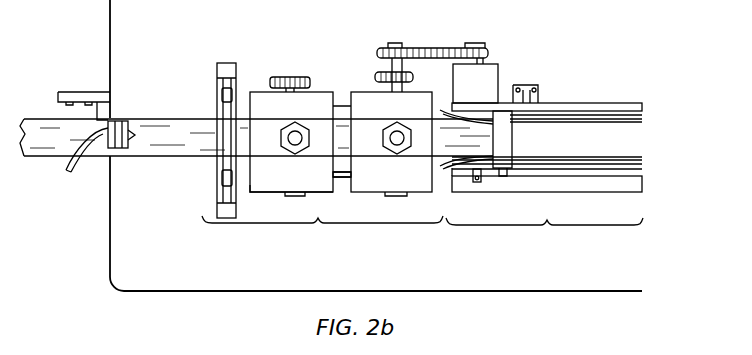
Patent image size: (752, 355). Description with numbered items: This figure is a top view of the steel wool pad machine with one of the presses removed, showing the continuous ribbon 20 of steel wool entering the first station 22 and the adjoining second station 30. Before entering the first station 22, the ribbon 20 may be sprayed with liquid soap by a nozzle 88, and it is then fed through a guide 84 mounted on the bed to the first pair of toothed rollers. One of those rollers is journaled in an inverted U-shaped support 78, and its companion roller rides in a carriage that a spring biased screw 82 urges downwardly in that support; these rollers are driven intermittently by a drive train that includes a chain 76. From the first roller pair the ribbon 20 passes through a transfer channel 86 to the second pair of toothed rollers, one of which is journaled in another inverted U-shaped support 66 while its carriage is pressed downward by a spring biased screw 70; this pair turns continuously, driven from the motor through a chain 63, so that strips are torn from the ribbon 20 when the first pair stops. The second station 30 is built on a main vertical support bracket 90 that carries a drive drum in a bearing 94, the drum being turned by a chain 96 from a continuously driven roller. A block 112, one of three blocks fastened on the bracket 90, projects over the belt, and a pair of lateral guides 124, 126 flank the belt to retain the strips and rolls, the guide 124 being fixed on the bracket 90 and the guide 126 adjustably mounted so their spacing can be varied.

The ribbon 20 is at (48, 151).
The nozzle 88 is at (120, 122).
The guide 84 is at (226, 65).
The spring biased screw 82 is at (295, 146).
The chain 76 is at (310, 77).
The inverted U-shaped support 78 is at (262, 187).
The inverted U-shaped support 66 is at (361, 93).
The spring biased screw 70 is at (397, 146).
The transfer channel 86 is at (341, 178).
The chain 63 is at (413, 78).
The chain 96 is at (433, 48).
The bearing 94 is at (498, 80).
The main vertical support bracket 90 is at (560, 102).
The lateral guide 124 is at (585, 121).
The block 112 is at (514, 158).
The lateral guide 126 is at (541, 162).
The first station 22 is at (322, 233).
The second station 30 is at (544, 235).